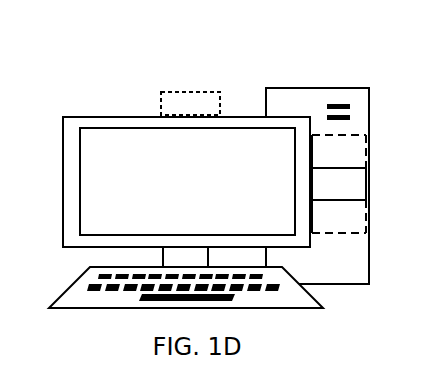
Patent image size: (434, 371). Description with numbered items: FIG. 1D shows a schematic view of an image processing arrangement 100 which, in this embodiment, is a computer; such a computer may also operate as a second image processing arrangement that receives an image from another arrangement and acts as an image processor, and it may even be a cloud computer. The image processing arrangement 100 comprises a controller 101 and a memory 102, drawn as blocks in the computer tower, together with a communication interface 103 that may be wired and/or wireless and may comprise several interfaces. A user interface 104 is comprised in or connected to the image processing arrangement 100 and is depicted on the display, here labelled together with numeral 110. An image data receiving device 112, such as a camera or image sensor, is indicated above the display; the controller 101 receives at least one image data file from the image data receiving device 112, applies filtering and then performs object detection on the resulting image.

The image processing arrangement 100 is at (60, 108).
The controller 101 is at (339, 151).
The memory 102 is at (339, 184).
The communication interface 103 is at (339, 216).
The user interface 104 is at (187, 181).
The user interface 110 is at (187, 181).
The image data receiving device 112 is at (190, 104).